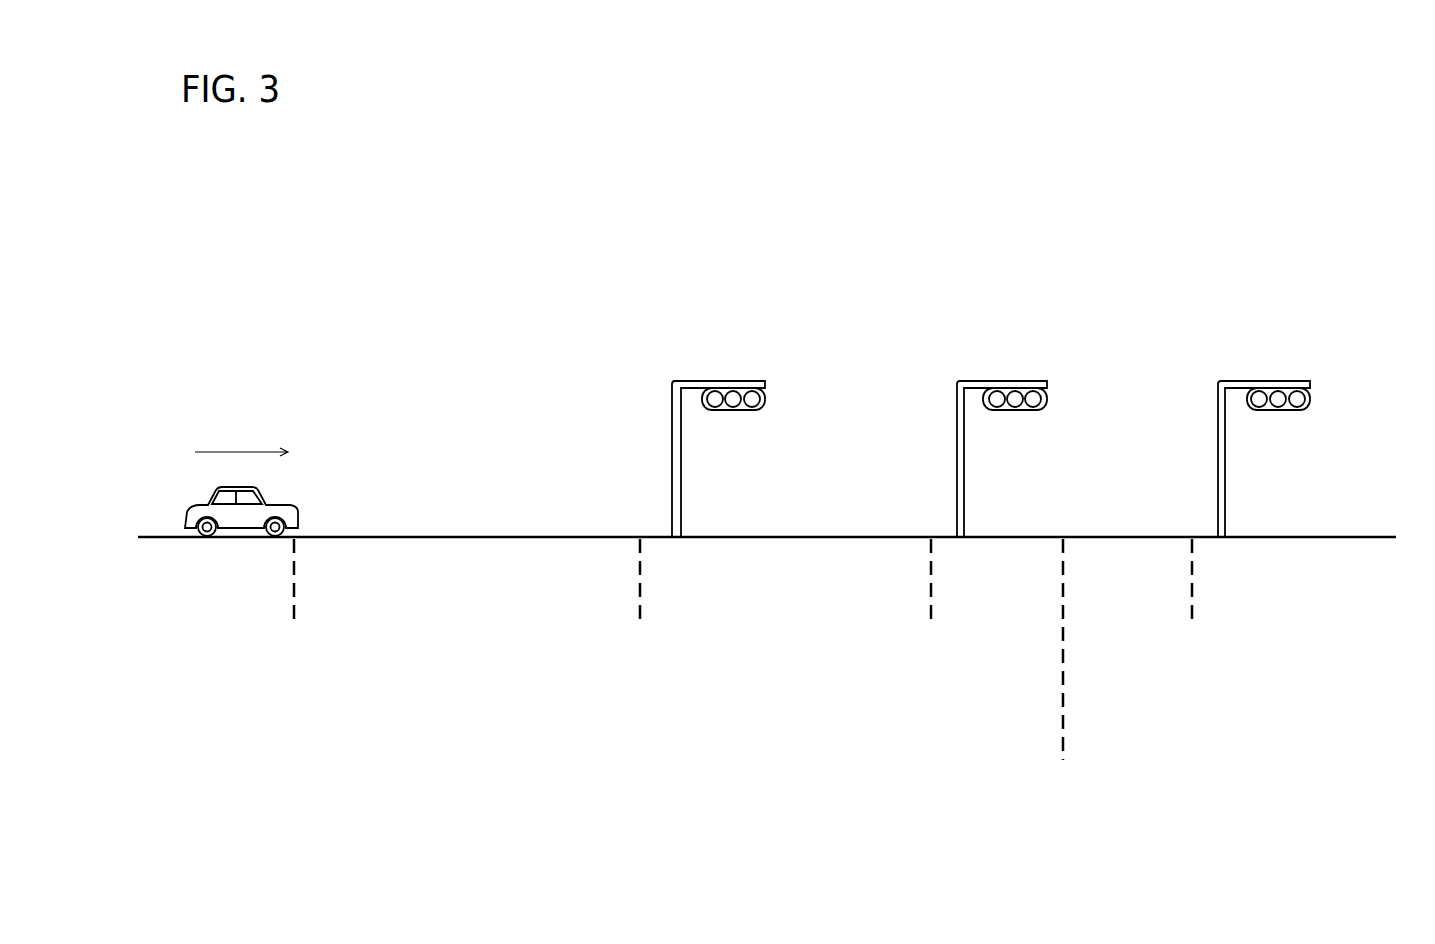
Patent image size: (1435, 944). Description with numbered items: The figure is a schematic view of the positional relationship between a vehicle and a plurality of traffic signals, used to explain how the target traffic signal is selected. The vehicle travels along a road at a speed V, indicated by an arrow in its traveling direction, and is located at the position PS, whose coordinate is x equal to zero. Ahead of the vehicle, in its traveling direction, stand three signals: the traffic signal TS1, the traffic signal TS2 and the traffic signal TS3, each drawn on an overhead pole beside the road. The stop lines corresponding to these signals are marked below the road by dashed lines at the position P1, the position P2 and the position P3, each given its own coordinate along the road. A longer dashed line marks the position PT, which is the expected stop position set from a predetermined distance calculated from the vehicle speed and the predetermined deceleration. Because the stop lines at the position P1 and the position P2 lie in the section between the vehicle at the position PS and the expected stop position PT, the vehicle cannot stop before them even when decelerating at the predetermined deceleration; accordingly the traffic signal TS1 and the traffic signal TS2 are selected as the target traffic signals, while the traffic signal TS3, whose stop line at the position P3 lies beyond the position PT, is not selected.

The traffic signal TS1 is at (735, 381).
The traffic signal TS2 is at (1016, 381).
The traffic signal TS3 is at (1278, 381).
The position PS is at (305, 610).
The position P1 is at (661, 610).
The position P2 is at (951, 610).
The position P3 is at (1211, 610).
The position PT is at (1082, 680).
The speed V is at (231, 451).